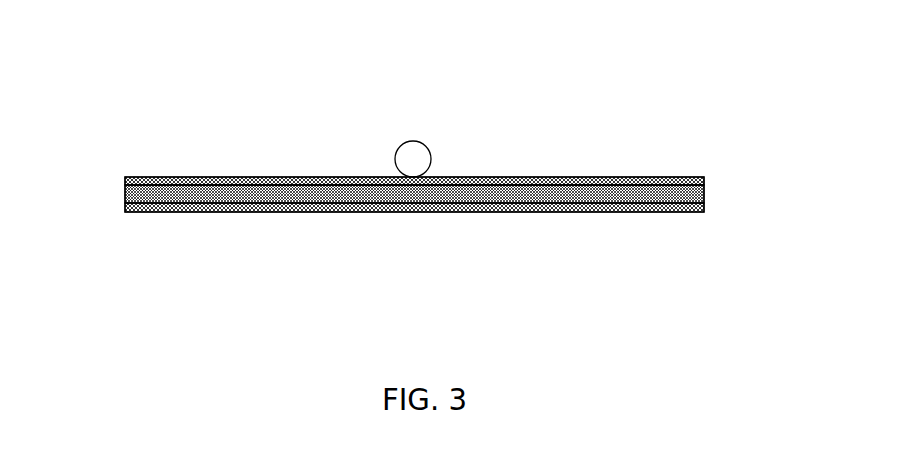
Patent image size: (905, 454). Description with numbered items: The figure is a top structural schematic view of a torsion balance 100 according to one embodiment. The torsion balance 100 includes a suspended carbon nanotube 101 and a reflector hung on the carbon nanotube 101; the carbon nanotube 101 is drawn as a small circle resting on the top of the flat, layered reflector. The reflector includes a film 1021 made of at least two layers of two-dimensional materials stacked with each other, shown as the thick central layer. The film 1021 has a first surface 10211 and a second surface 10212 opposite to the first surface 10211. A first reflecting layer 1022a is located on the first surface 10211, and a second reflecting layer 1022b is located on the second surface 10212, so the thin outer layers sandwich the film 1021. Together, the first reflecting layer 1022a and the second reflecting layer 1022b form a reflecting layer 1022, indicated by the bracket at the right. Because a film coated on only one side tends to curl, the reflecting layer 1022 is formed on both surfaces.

The torsion balance 100 is at (460, 88).
The carbon nanotube 101 is at (413, 161).
The film 1021 is at (364, 200).
The first surface 10211 is at (218, 182).
The second surface 10212 is at (177, 207).
The reflecting layer 1022 is at (801, 240).
The first reflecting layer 1022a is at (678, 178).
The second reflecting layer 1022b is at (673, 203).